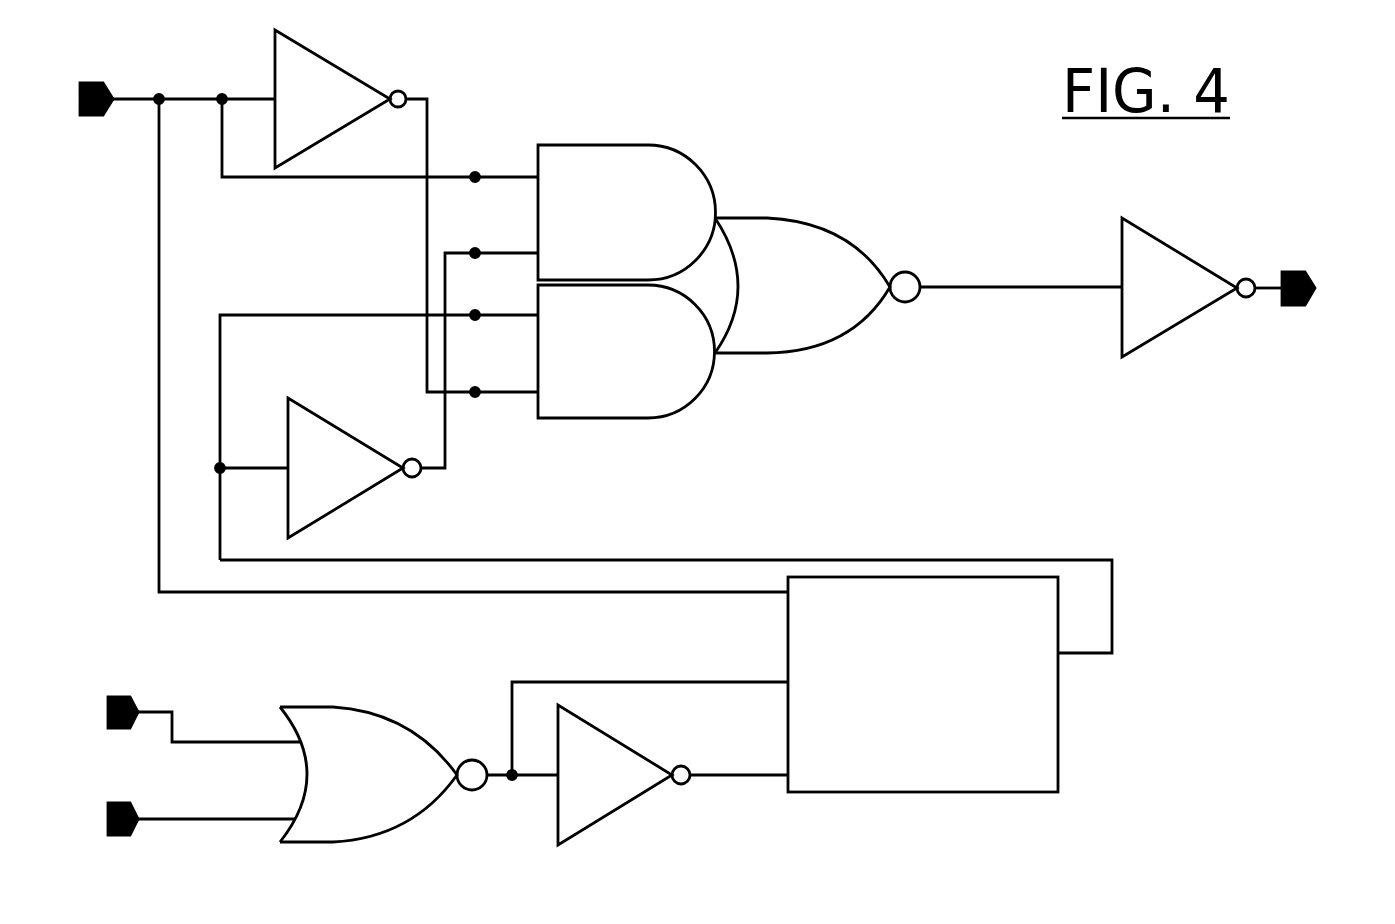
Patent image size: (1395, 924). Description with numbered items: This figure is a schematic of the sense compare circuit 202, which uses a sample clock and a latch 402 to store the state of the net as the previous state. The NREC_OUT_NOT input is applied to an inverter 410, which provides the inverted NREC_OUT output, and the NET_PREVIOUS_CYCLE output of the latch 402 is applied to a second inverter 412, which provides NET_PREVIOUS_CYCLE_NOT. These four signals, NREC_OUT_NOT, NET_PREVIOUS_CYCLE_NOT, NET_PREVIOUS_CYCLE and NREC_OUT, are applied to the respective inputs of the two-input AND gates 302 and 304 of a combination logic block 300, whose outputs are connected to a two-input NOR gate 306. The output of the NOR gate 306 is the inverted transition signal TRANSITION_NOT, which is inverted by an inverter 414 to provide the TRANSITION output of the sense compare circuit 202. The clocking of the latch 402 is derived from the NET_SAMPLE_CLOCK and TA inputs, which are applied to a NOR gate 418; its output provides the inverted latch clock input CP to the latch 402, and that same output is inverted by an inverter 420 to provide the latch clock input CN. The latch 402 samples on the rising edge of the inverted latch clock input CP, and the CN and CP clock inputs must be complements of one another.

The sense compare circuit 202 is at (880, 131).
The logic block 300 is at (718, 173).
The AND gate 302 is at (626, 212).
The AND gate 304 is at (626, 351).
The NOR gate 306 is at (817, 285).
The latch 402 is at (923, 684).
The inverter 410 is at (340, 99).
The second inverter 412 is at (354, 468).
The inverter 414 is at (1188, 287).
The NOR gate 418 is at (383, 774).
The inverter 420 is at (624, 775).